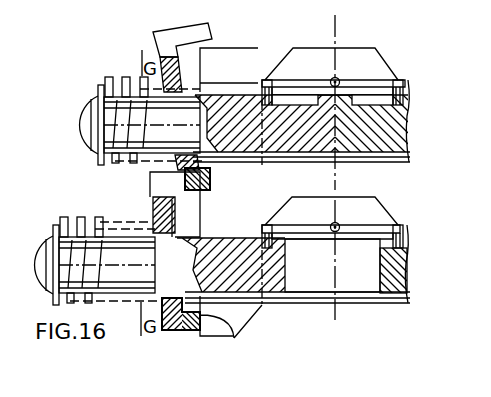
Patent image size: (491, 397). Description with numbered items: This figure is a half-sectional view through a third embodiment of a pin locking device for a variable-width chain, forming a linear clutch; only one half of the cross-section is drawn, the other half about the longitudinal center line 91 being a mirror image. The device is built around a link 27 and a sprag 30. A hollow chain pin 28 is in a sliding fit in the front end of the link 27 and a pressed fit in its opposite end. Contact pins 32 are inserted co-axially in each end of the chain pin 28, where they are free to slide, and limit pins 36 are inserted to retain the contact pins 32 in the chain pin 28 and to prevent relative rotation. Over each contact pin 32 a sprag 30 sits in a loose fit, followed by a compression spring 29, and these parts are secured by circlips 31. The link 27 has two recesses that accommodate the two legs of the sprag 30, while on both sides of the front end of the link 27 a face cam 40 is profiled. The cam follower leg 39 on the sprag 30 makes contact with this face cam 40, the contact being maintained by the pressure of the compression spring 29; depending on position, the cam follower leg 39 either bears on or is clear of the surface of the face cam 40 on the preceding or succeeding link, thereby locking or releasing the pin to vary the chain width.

The link 27 is at (408, 47).
The hollow chain pin 28 is at (362, 222).
The compression spring 29 is at (115, 165).
The sprag 30 is at (212, 24).
The circlip 31 is at (98, 80).
The contact pin 32 is at (80, 127).
The limit pin 36 is at (268, 80).
The cam follower leg 39 is at (236, 192).
The face cam 40 is at (236, 340).
The longitudinal center line 91 is at (337, 73).